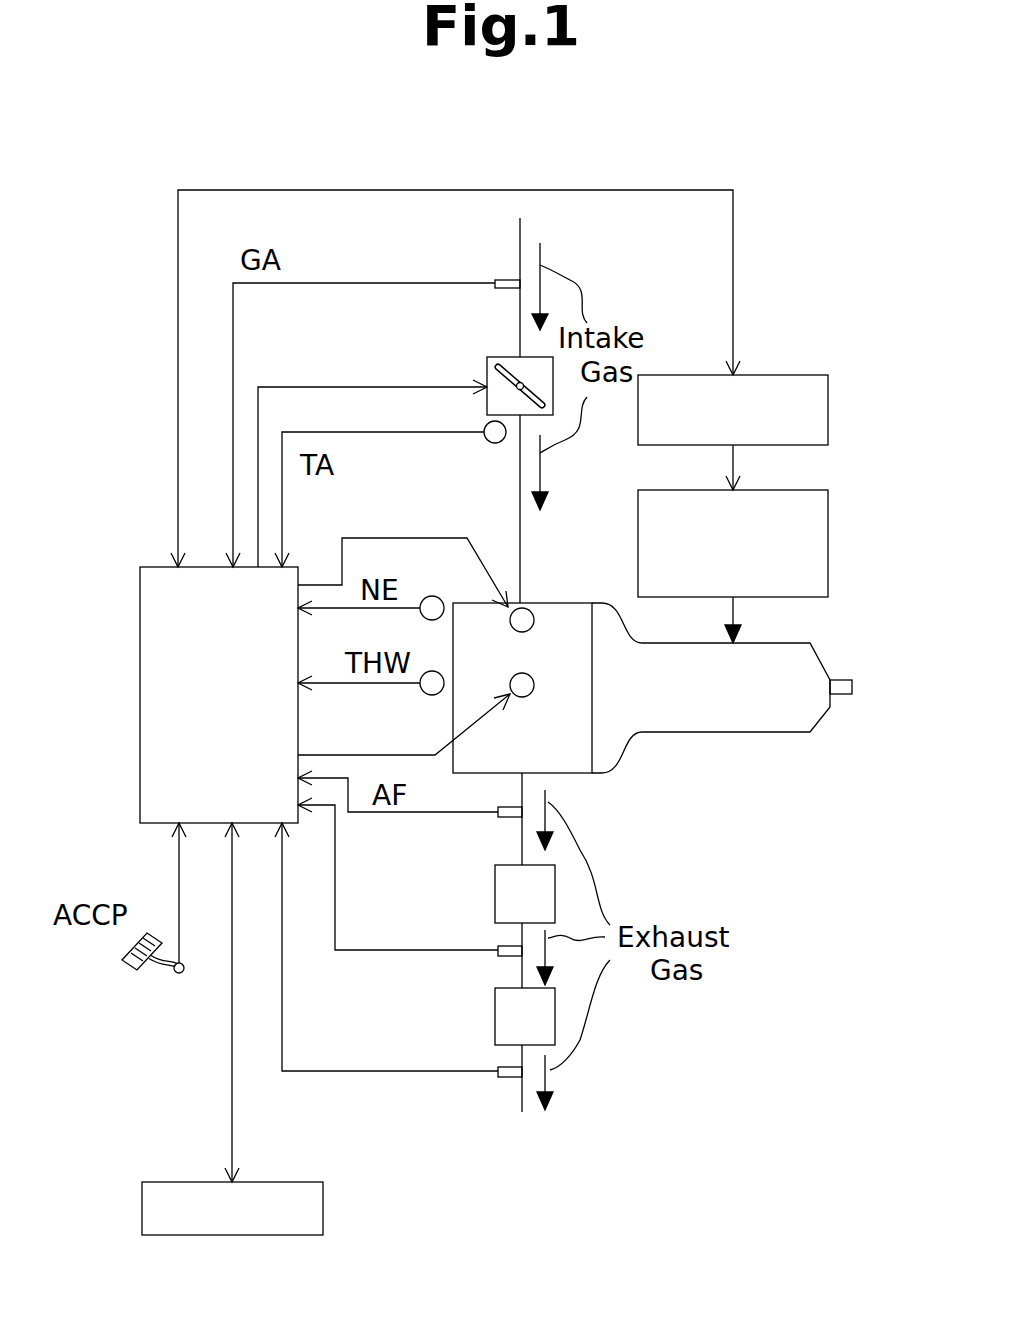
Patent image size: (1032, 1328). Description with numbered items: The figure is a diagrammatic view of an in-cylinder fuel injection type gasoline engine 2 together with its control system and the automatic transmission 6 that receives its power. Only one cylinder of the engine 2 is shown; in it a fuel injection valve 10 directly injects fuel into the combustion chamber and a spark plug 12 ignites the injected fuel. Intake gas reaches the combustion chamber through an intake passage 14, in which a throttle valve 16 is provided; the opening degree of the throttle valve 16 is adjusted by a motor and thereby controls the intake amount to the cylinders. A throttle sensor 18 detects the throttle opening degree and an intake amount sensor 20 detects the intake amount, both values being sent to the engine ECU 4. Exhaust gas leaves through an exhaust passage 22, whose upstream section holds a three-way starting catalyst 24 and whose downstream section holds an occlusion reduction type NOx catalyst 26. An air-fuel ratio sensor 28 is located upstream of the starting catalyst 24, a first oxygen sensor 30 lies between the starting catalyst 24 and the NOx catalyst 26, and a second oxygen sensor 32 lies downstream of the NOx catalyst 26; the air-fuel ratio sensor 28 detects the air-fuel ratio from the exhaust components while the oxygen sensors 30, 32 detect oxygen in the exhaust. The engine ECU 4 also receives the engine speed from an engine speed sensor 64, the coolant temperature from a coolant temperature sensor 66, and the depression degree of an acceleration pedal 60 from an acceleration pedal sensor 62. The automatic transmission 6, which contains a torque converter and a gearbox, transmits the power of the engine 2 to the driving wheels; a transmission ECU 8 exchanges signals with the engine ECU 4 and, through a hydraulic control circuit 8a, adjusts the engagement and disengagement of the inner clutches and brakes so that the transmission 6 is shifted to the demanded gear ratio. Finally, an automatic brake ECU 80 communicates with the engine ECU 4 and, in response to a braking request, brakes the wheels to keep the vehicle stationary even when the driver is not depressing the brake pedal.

The engine 2 is at (573, 603).
The engine ECU 4 is at (157, 566).
The automatic transmission 6 is at (737, 733).
The transmission ECU 8 is at (810, 375).
The hydraulic control circuit 8a is at (800, 490).
The fuel injection valve 10 is at (535, 618).
The spark plug 12 is at (527, 697).
The intake passage 14 is at (520, 315).
The throttle valve 16 is at (487, 368).
The throttle sensor 18 is at (488, 441).
The intake amount sensor 20 is at (495, 280).
The exhaust passage 22 is at (522, 840).
The starting catalyst 24 is at (495, 888).
The NOx catalyst 26 is at (495, 1000).
The air-fuel ratio sensor 28 is at (497, 808).
The first oxygen sensor 30 is at (503, 956).
The second oxygen sensor 32 is at (503, 1080).
The acceleration pedal 60 is at (125, 963).
The acceleration pedal sensor 62 is at (180, 978).
The engine speed sensor 64 is at (437, 578).
The coolant temperature sensor 66 is at (425, 695).
The automatic brake ECU 80 is at (323, 1210).